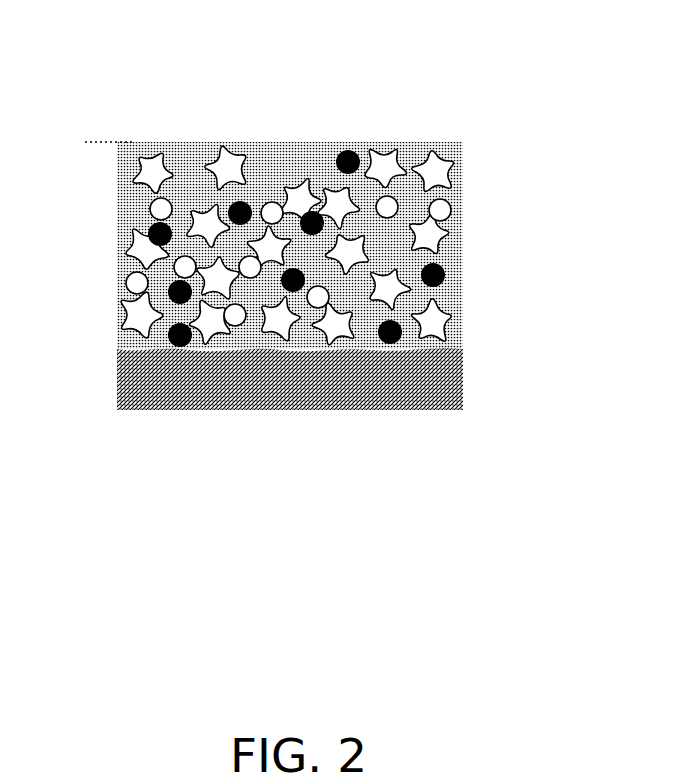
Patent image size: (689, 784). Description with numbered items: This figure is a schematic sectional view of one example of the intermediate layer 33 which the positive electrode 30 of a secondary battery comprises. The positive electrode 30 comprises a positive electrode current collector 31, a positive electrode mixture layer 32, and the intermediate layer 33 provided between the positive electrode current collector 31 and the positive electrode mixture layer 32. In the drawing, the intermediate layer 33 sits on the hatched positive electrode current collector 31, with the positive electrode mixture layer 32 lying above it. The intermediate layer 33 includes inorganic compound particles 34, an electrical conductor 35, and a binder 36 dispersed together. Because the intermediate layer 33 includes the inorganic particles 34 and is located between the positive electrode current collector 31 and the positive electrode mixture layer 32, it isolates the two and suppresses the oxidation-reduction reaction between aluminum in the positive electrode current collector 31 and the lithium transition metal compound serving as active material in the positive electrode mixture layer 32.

The positive electrode 30 is at (42, 38).
The positive electrode current collector 31 is at (96, 349).
The positive electrode mixture layer 32 is at (96, 142).
The intermediate layer 33 is at (312, 245).
The inorganic compound particles 34 is at (436, 327).
The electrical conductor 35 is at (452, 262).
The binder 36 is at (442, 212).